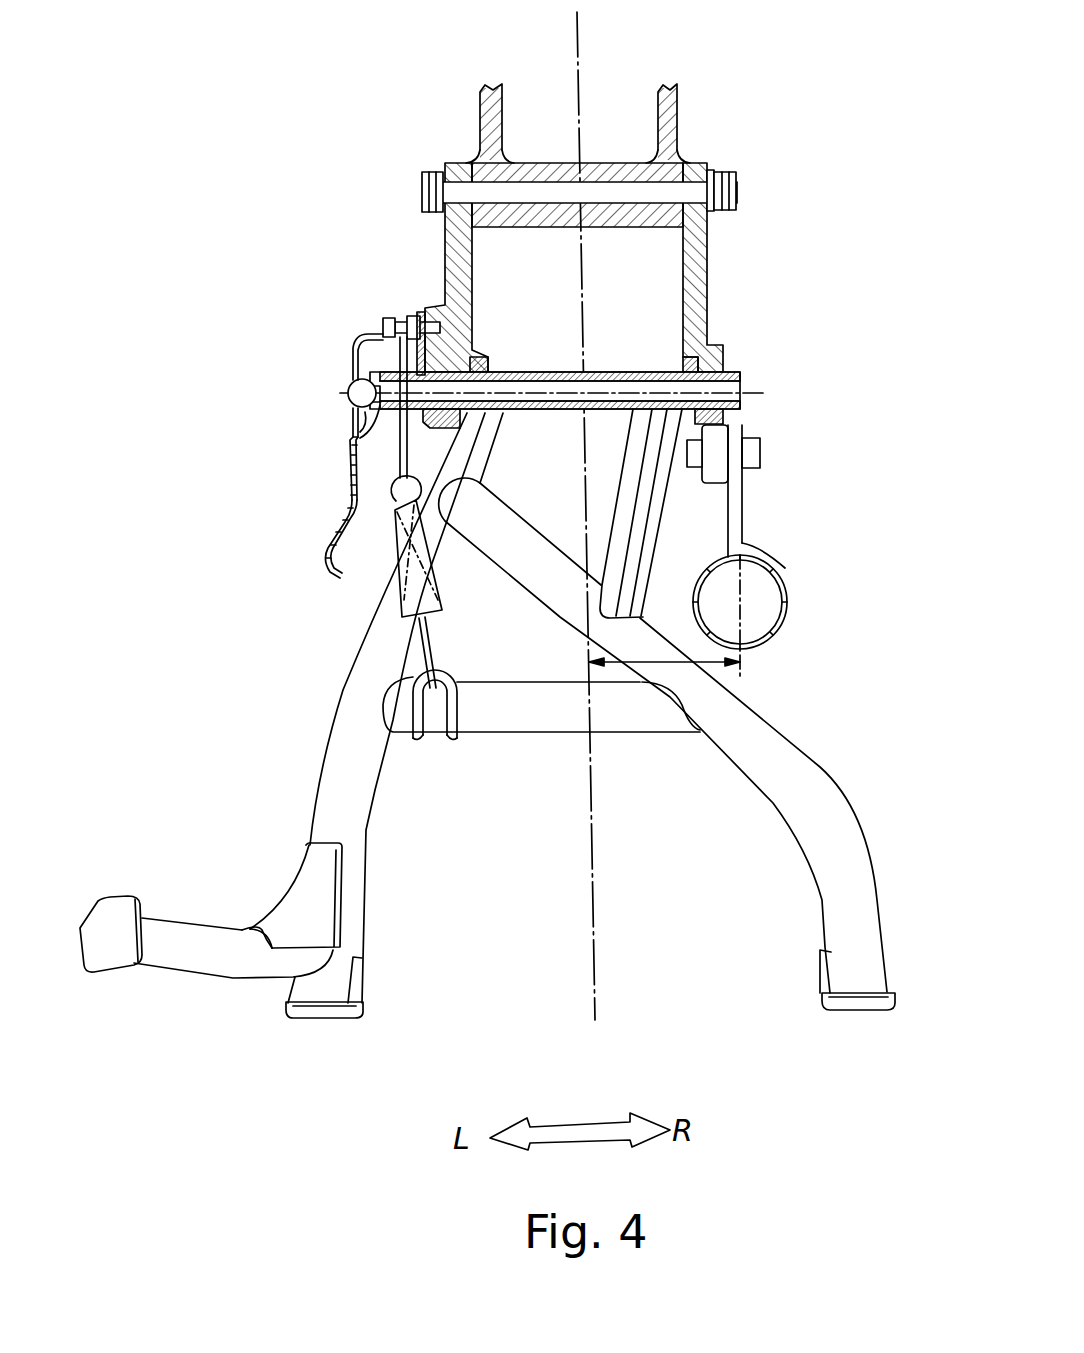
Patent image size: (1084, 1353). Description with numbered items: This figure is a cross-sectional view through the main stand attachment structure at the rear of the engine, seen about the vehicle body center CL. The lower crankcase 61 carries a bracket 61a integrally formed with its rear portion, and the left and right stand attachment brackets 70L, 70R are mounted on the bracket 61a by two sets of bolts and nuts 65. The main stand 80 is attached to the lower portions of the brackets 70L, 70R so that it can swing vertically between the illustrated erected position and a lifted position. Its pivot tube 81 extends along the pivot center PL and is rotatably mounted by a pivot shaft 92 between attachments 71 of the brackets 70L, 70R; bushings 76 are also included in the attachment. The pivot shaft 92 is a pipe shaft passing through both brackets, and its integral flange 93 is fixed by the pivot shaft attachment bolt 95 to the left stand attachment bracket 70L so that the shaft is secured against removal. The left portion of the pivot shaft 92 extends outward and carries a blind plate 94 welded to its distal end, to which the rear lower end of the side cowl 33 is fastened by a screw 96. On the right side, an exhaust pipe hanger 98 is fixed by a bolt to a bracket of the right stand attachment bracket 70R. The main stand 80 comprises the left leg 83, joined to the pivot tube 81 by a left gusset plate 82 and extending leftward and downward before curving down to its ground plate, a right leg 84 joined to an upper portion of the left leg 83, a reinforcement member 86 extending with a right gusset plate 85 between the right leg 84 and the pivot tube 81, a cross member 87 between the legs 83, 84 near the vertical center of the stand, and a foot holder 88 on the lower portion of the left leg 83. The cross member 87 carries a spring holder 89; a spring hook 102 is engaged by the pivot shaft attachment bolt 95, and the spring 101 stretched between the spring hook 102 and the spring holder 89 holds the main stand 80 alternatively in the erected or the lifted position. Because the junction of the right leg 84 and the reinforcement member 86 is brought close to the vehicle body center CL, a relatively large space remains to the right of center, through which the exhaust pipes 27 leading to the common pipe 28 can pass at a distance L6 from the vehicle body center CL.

The vehicle body center CL is at (587, 27).
The crankcase 61 is at (668, 122).
The bracket 61a is at (538, 232).
The bolts and nuts 65 is at (430, 186).
The left stand attachment bracket 70L is at (440, 252).
The right stand attachment bracket 70R is at (716, 276).
The bushings 76 is at (492, 370).
The pivot center PL is at (760, 388).
The attachments 71 is at (430, 440).
The pivot shaft 92 is at (350, 422).
The flange 93 is at (420, 313).
The blind plate 94 is at (362, 345).
The pivot shaft attachment bolt 95 is at (385, 320).
The screw 96 is at (352, 390).
The exhaust pipe hanger 98 is at (762, 468).
The spring hook 102 is at (352, 450).
The side cowl 33 is at (318, 547).
The right gusset plate 85 is at (656, 498).
The reinforcement member 86 is at (660, 540).
The common pipe 28 is at (799, 620).
The exhaust pipes 27 is at (778, 645).
The distance L6 is at (680, 665).
The main stand 80 is at (504, 741).
The pivot tube 81 is at (553, 420).
The left gusset plate 82 is at (400, 612).
The left leg 83 is at (342, 738).
The right leg 84 is at (830, 802).
The cross member 87 is at (530, 732).
The foot holder 88 is at (176, 960).
The spring holder 89 is at (452, 672).
The spring 101 is at (408, 578).